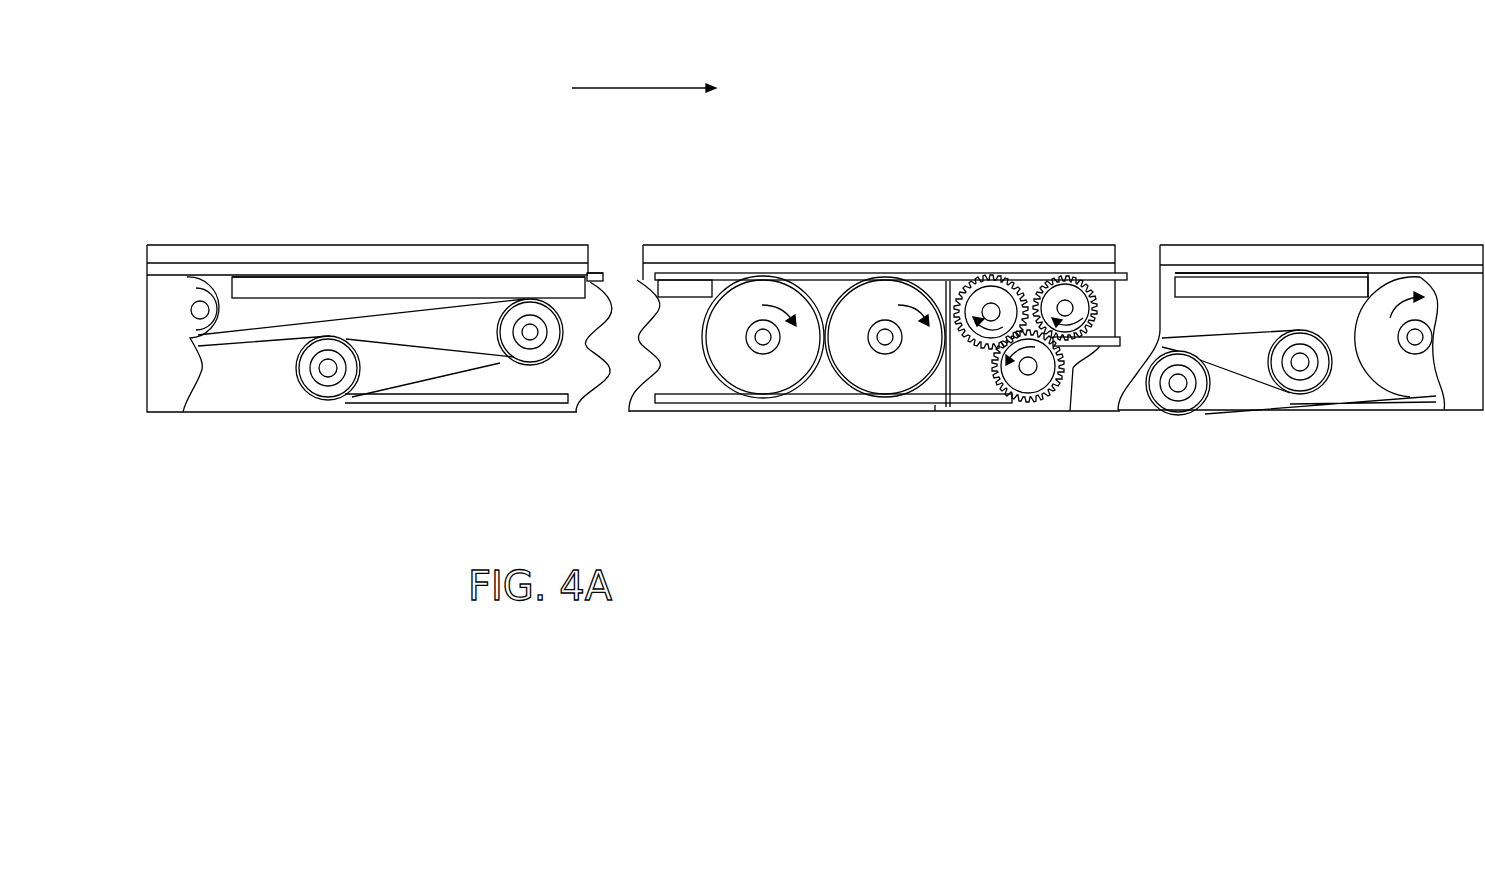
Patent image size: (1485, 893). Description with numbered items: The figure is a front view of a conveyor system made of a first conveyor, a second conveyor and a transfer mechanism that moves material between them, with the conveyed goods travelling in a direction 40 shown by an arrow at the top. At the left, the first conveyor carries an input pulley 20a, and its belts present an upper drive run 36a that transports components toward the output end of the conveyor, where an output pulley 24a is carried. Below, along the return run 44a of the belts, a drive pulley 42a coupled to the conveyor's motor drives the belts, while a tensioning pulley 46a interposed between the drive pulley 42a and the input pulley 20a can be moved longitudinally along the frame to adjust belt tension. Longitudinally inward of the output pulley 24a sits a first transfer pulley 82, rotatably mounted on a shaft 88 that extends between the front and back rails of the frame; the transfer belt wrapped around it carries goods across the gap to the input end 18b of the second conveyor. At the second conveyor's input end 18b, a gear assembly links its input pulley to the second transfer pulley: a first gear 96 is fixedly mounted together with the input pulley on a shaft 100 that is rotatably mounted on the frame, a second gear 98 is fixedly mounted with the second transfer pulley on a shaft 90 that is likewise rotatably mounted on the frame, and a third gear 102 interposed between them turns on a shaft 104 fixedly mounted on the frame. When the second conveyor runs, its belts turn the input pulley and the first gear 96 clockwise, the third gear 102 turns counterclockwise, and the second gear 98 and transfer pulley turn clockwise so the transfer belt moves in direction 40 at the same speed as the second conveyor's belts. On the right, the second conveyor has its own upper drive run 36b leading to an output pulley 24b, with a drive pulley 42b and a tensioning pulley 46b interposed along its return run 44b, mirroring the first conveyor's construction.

The direction 40 is at (643, 88).
The input pulley 20a is at (212, 295).
The upper drive run 36a is at (603, 275).
The drive pulley 42a is at (329, 392).
The tensioning pulley 46a is at (528, 352).
The return run 44a is at (563, 400).
The first transfer pulley 82 is at (745, 372).
The shaft 88 is at (766, 338).
The output pulley 24a is at (885, 387).
The input end 18b is at (972, 403).
The first gear 96 is at (1002, 285).
The shaft 100 is at (987, 307).
The second gear 98 is at (1077, 298).
The shaft 90 is at (1063, 303).
The third gear 102 is at (1038, 382).
The shaft 104 is at (1027, 370).
The upper drive run 36b is at (1379, 277).
The output pulley 24b is at (1412, 373).
The drive pulley 42b is at (1182, 407).
The tensioning pulley 46b is at (1303, 383).
The return run 44b is at (1255, 410).